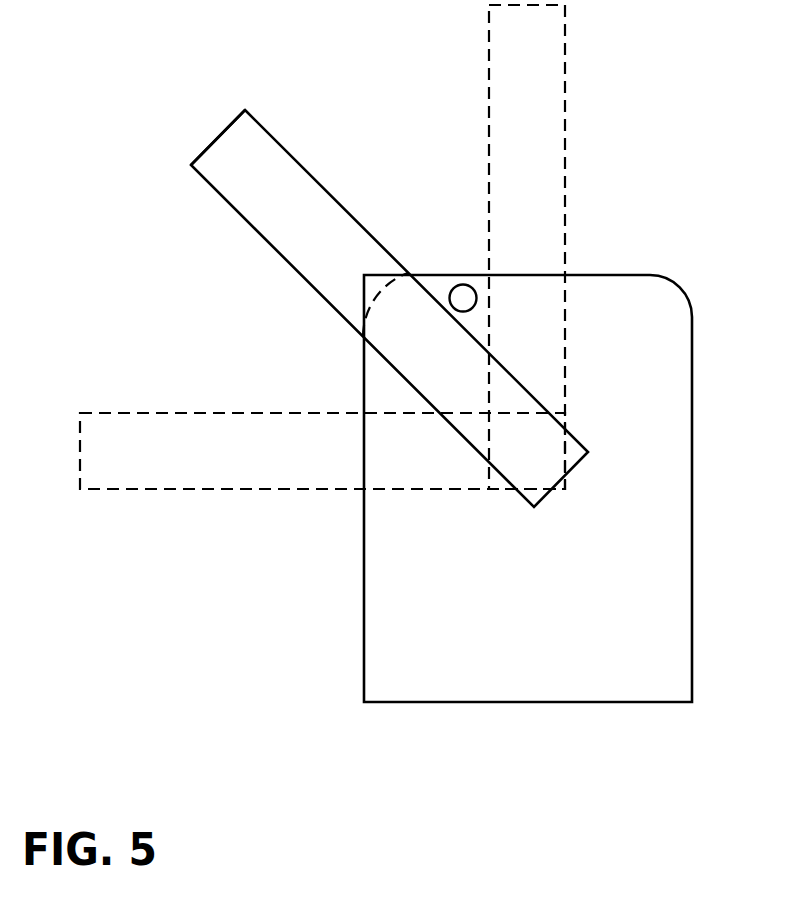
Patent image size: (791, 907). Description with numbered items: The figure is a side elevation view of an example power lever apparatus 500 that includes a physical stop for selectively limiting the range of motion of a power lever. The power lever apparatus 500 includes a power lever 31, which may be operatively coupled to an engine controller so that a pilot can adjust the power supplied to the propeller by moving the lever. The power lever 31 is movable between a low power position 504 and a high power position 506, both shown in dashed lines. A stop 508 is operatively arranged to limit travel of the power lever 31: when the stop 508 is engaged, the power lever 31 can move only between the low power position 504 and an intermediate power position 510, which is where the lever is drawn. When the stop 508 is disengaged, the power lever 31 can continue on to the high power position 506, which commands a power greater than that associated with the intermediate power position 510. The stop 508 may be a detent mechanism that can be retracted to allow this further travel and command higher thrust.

The power lever apparatus 500 is at (116, 129).
The power lever 31 is at (283, 177).
The intermediate power position 510 is at (245, 228).
The stop 508 is at (463, 300).
The high power position 506 is at (572, 128).
The low power position 504 is at (182, 493).